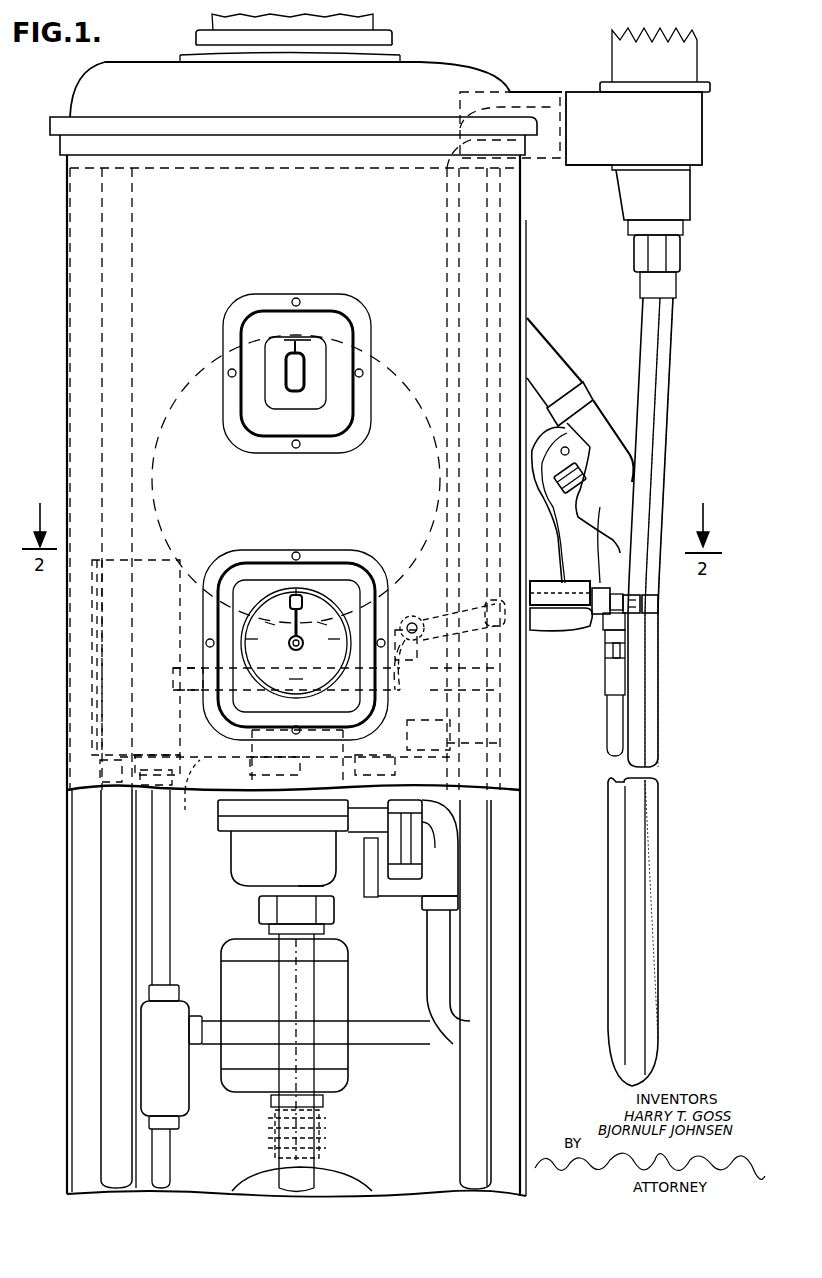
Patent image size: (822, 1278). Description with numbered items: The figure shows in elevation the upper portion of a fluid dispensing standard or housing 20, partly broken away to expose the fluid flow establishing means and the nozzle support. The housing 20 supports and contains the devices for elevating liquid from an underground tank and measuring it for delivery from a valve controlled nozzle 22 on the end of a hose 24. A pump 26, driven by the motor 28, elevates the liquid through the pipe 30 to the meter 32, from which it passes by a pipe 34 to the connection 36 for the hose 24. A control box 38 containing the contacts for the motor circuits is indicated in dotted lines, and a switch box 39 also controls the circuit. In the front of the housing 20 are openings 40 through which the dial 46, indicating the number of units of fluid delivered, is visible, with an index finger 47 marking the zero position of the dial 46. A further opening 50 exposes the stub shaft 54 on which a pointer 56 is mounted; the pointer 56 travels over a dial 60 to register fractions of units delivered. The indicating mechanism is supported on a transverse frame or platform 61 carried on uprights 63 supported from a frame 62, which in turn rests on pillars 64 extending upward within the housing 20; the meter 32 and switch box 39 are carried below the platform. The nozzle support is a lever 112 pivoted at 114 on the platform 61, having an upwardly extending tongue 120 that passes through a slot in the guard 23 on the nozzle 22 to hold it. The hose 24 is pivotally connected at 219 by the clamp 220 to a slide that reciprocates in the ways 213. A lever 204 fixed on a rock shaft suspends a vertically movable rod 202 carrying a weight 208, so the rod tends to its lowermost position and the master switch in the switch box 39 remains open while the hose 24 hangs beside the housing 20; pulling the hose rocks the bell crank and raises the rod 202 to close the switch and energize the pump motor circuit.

The dispensing standard or housing 20 is at (520, 900).
The valve controlled nozzle 22 is at (590, 426).
The guard 23 is at (532, 549).
The hose 24 is at (650, 380).
The pump 26 is at (246, 1180).
The motor 28 is at (252, 1078).
The pipe 30 is at (290, 996).
The meter 32 is at (257, 860).
The pipe 34 is at (433, 843).
The connection 36 is at (605, 133).
The control box 38 is at (155, 700).
The switch box 39 is at (402, 884).
The openings 40 is at (319, 390).
The dial 46 is at (308, 371).
The index finger 47 is at (294, 349).
The opening 50 is at (330, 597).
The stub shaft 54 is at (302, 640).
The pointer 56 is at (282, 609).
The dial 60 is at (323, 610).
The transverse frame (platform) 61 is at (230, 668).
The frame 62 is at (193, 795).
The uprights 63 is at (200, 738).
The pillars 64 is at (114, 846).
The nozzle support lever 112 is at (557, 618).
The pivot 114 is at (411, 660).
The tongue 120 is at (576, 511).
The vertically movable rod 202 is at (446, 686).
The lever 204 is at (483, 650).
The weight 208 is at (500, 743).
The ways 213 is at (556, 605).
The pivotal connection 219 is at (625, 590).
The clamp 220 is at (660, 605).